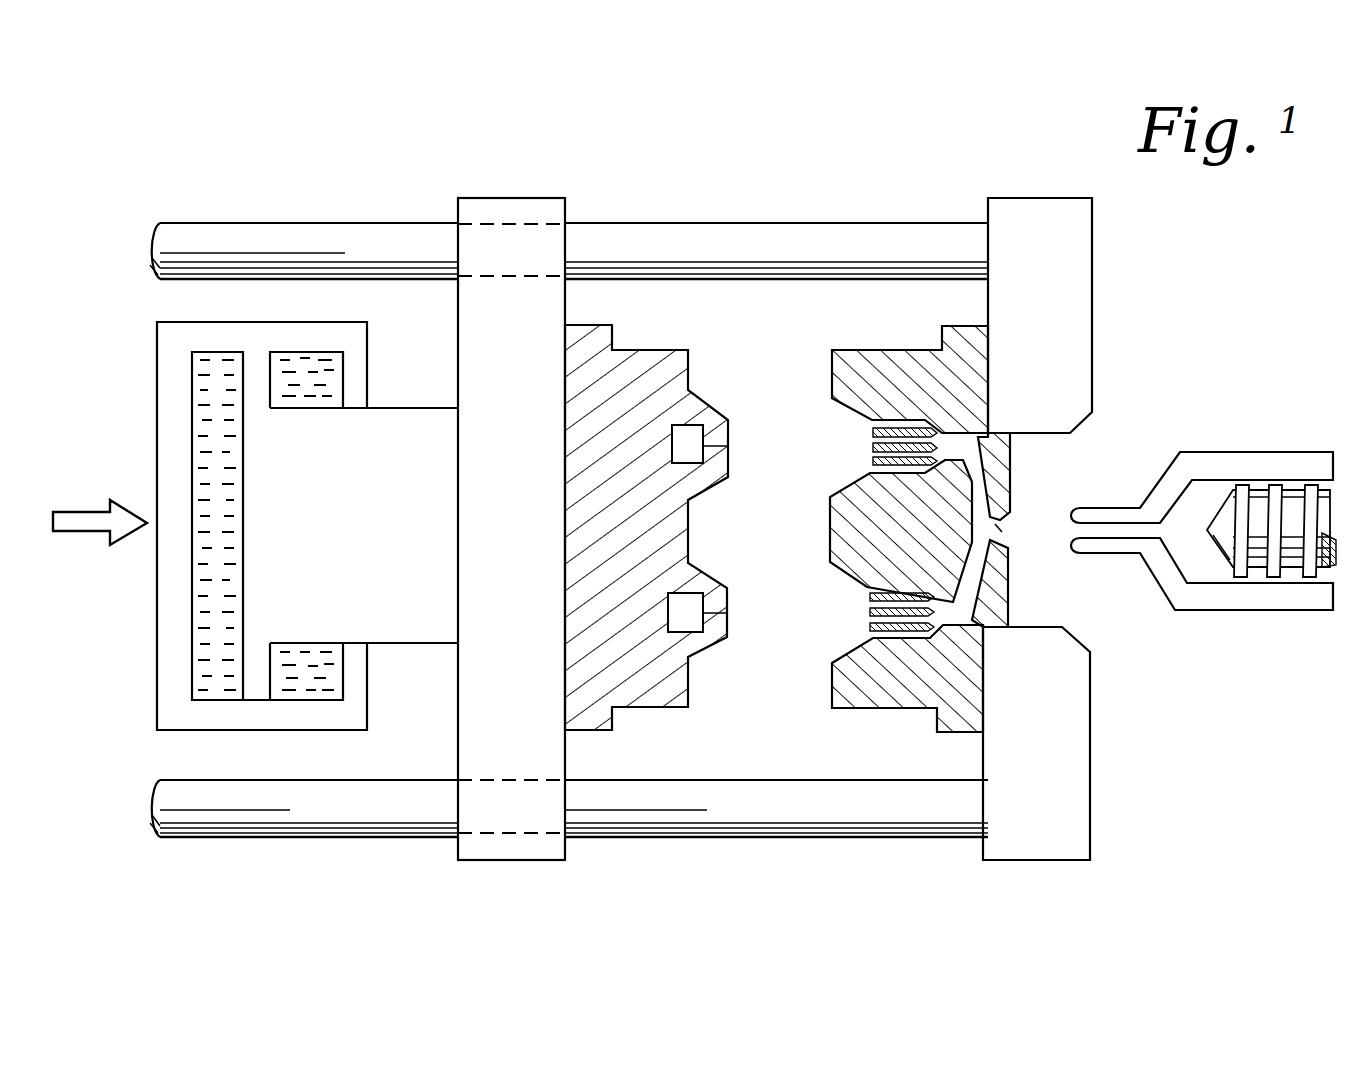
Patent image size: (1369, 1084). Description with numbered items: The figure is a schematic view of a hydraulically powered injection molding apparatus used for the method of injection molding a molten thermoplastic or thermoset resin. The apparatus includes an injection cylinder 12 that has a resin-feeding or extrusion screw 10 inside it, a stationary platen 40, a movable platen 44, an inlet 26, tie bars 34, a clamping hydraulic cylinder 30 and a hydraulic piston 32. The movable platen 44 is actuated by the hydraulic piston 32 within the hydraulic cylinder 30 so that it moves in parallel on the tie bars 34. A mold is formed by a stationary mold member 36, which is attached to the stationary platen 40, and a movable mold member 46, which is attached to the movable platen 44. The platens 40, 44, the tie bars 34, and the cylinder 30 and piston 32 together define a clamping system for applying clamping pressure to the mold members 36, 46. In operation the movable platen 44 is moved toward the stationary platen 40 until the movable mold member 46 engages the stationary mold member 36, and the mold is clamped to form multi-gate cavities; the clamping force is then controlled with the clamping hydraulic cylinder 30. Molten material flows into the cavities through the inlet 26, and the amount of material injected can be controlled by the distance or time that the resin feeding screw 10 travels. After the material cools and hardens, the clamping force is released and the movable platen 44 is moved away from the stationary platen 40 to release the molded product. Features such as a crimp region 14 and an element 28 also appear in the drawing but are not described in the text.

The extrusion screw 10 is at (1333, 572).
The injection cylinder 12 is at (1227, 455).
The crimp point 14 is at (1000, 528).
The inlet 26 is at (978, 470).
The lower crimping die 28 is at (975, 572).
The clamping hydraulic cylinder 30 is at (157, 703).
The hydraulic piston 32 is at (405, 633).
The tie bars 34 is at (673, 825).
The stationary mold member 36 is at (920, 700).
The stationary platen 40 is at (1077, 300).
The movable platen 44 is at (493, 822).
The movable mold member 46 is at (648, 700).